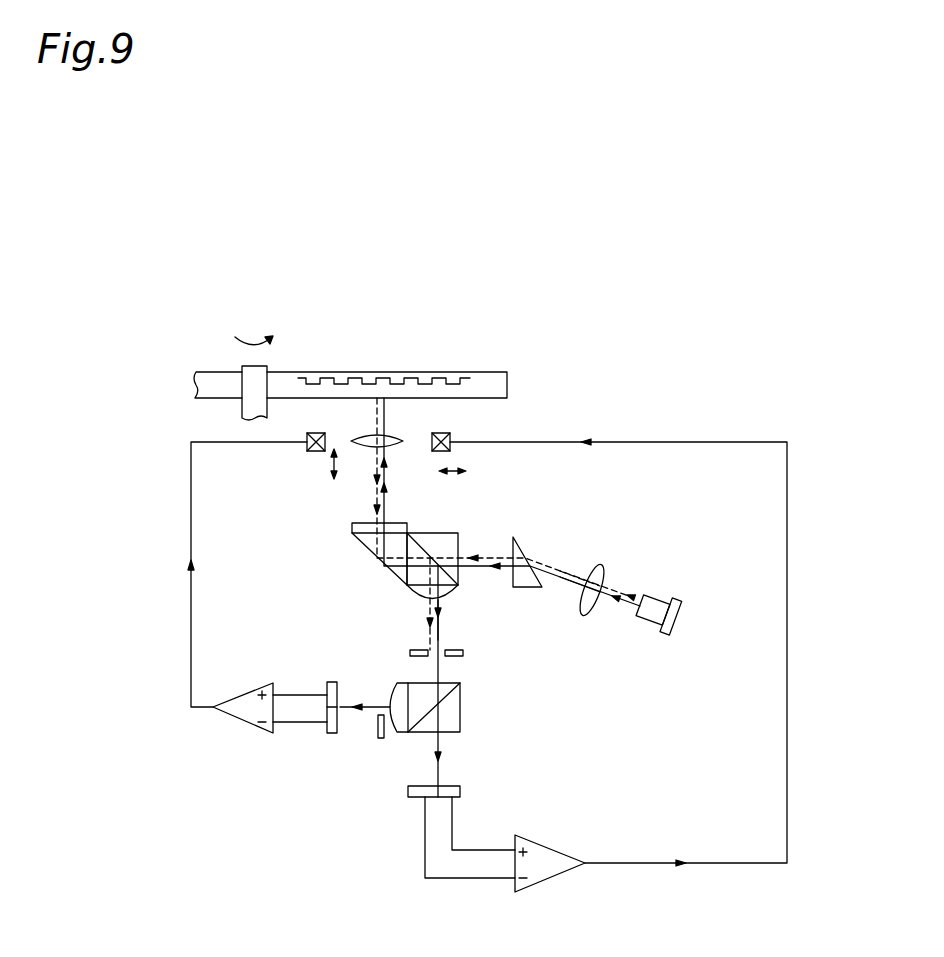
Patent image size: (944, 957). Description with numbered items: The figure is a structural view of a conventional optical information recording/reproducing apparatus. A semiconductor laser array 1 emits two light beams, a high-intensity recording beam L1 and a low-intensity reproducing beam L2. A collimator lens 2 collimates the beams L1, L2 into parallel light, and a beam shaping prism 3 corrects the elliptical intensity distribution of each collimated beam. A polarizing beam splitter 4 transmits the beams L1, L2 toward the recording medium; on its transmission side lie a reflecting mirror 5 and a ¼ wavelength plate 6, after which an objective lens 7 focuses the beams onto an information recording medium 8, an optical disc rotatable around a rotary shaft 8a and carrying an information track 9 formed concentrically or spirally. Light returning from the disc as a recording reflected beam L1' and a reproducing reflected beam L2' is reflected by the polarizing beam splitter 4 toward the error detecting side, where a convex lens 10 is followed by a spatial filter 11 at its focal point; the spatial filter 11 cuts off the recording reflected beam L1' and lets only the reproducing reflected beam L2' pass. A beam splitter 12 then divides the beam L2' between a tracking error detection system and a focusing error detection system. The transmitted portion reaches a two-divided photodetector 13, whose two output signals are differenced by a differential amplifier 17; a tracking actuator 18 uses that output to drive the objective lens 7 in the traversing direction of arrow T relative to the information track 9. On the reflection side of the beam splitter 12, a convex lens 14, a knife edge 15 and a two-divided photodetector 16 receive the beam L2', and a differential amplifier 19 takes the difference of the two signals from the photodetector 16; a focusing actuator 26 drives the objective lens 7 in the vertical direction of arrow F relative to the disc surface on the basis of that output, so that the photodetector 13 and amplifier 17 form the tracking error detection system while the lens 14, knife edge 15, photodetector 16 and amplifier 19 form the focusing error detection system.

The semiconductor laser array 1 is at (661, 592).
The collimator lens 2 is at (601, 563).
The beam shaping prism 3 is at (526, 540).
The polarizing beam splitter 4 is at (426, 533).
The reflecting mirror 5 is at (364, 545).
The ¼ wavelength plate 6 is at (352, 527).
The objective lens 7 is at (402, 440).
The information recording medium 8 is at (484, 372).
The rotary shaft 8a is at (253, 366).
The information track 9 is at (380, 372).
The convex lens 10 is at (447, 597).
The spatial filter 11 is at (463, 653).
The beam splitter 12 is at (460, 702).
The two-divided photodetector 13 is at (460, 791).
The convex lens 14 is at (393, 692).
The knife edge 15 is at (380, 740).
The two-divided photodetector 16 is at (332, 735).
The differential amplifier 17 is at (553, 848).
The tracking actuator 18 is at (450, 436).
The differential amplifier 19 is at (240, 724).
The focusing actuator 26 is at (307, 450).
The recording beam L1 is at (608, 557).
The reproducing beam L2 is at (588, 616).
The recording reflected beam L1' is at (396, 604).
The reproducing reflected beam L2' is at (484, 620).
The arrow F is at (332, 460).
The arrow T is at (452, 476).